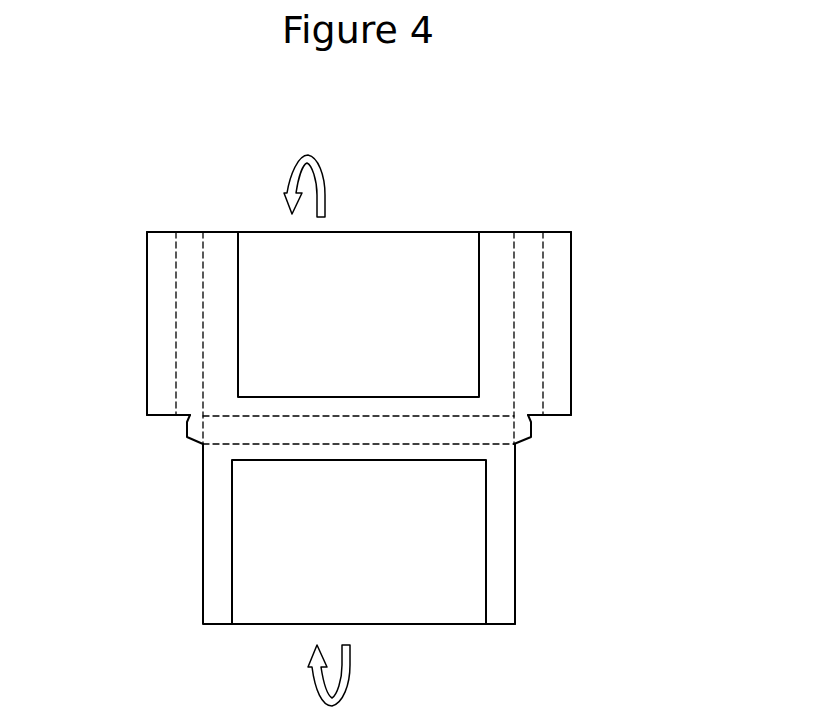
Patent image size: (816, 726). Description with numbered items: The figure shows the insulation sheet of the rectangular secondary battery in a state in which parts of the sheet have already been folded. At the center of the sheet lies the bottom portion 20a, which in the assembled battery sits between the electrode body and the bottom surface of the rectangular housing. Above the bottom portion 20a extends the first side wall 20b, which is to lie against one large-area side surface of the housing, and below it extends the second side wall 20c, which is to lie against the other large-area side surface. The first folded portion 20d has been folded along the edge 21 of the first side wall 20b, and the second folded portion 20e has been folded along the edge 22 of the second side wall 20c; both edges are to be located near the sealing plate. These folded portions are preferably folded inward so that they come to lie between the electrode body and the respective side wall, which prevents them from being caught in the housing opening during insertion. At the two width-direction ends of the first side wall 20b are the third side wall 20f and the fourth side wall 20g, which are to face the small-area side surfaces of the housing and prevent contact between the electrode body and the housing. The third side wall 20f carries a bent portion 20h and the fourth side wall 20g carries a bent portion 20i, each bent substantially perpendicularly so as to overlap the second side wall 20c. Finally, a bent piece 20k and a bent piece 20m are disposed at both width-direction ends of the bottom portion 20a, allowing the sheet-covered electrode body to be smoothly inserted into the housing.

The edge of the first side wall 21 is at (384, 232).
The edge of the second side wall 22 is at (428, 628).
The bottom portion 20a is at (447, 433).
The first side wall 20b is at (485, 323).
The second side wall 20c is at (497, 578).
The first folded portion 20d is at (447, 277).
The second folded portion 20e is at (265, 580).
The third side wall 20f is at (190, 262).
The fourth side wall 20g is at (525, 262).
The bent portion 20h is at (160, 340).
The bent portion 20i is at (555, 375).
The bent piece 20k is at (193, 430).
The bent piece 20m is at (523, 427).